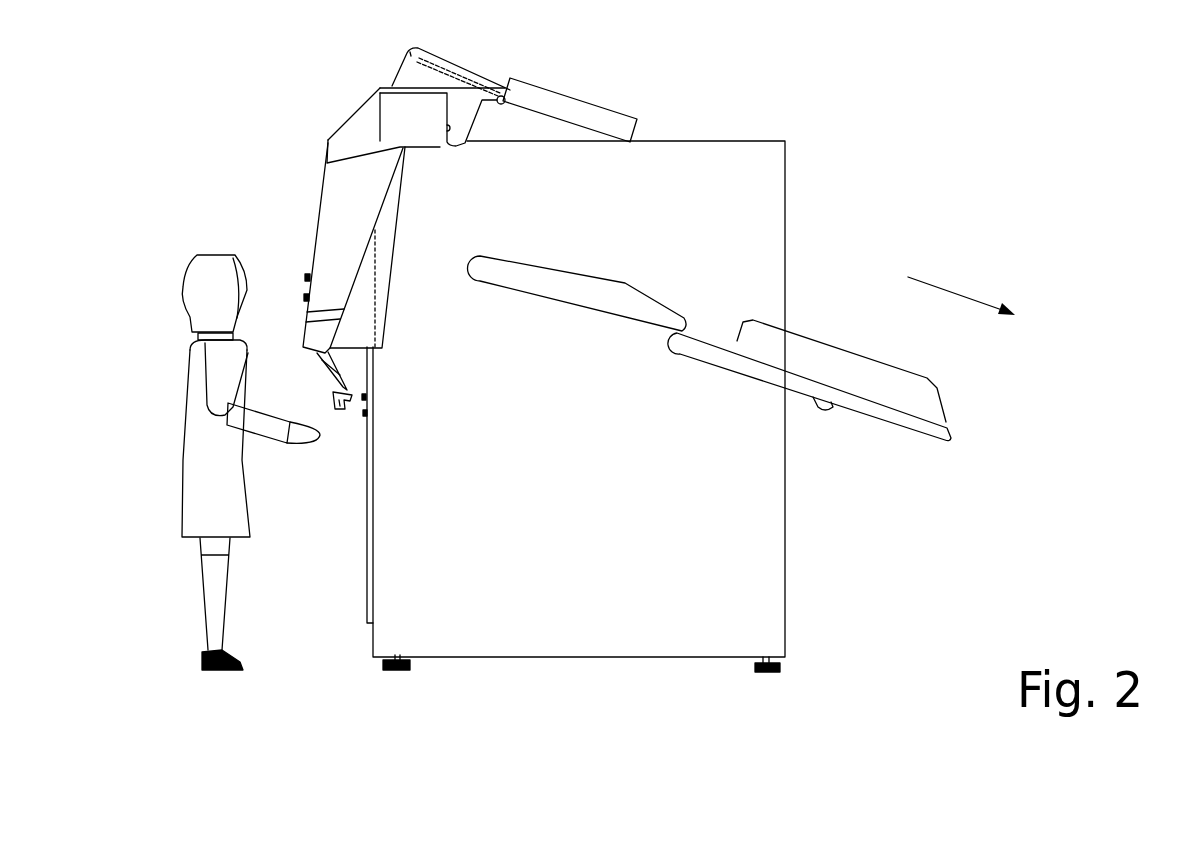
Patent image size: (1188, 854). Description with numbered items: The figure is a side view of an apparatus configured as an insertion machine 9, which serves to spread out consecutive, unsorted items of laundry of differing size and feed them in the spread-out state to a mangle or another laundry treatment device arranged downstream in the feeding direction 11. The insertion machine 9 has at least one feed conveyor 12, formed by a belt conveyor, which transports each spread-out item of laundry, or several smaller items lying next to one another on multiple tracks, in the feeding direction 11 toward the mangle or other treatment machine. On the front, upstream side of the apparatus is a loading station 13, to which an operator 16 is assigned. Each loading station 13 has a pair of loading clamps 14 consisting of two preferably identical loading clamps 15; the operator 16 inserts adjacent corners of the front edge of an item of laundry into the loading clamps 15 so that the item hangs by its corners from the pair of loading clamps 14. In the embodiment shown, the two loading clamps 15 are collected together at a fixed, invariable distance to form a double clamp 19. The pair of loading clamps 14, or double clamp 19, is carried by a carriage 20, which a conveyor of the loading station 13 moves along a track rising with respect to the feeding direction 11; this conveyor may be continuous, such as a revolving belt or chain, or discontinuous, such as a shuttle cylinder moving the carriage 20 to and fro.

The insertion machine 9 is at (820, 230).
The feeding direction 11 is at (970, 297).
The feed conveyor 12 is at (603, 290).
The loading station 13 is at (296, 204).
The pair of loading clamps 14 is at (299, 502).
The loading clamp 15 is at (299, 502).
The operator 16 is at (207, 482).
The double clamp 19 is at (340, 410).
The carriage 20 is at (228, 425).